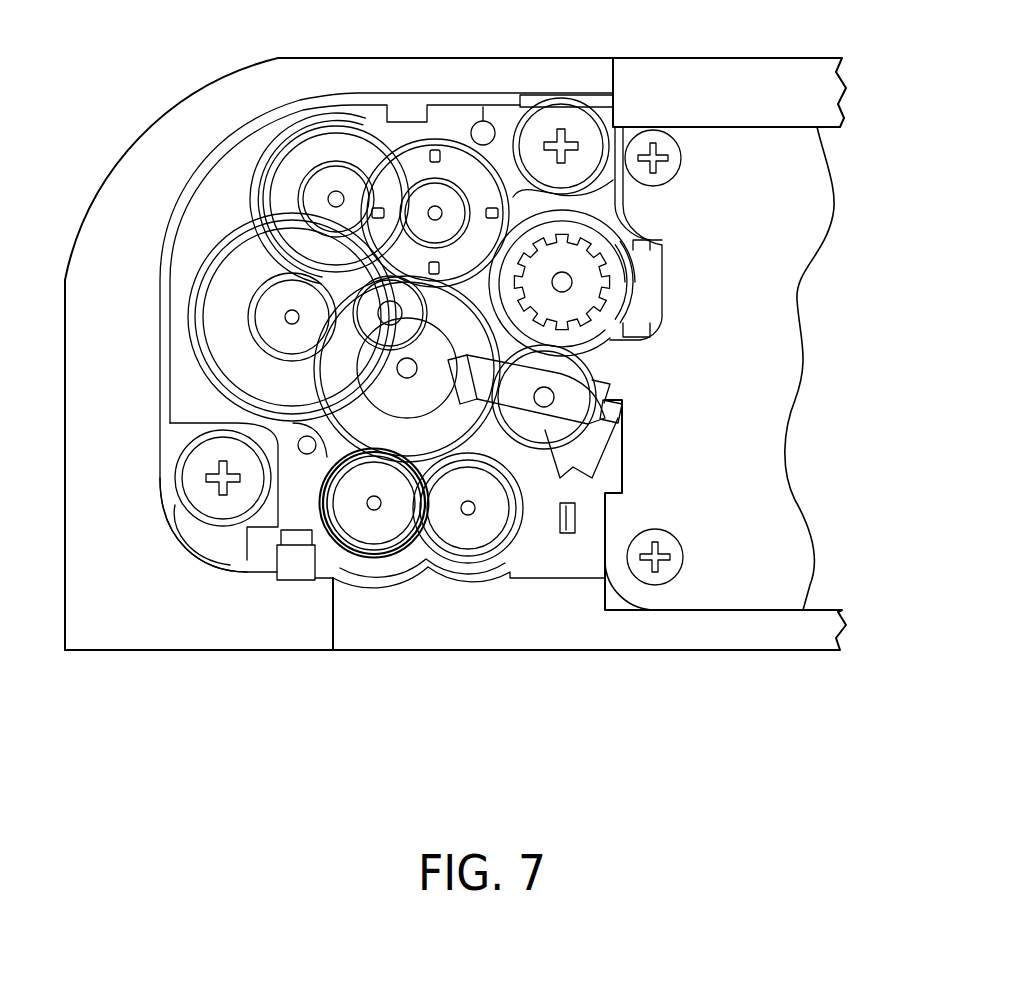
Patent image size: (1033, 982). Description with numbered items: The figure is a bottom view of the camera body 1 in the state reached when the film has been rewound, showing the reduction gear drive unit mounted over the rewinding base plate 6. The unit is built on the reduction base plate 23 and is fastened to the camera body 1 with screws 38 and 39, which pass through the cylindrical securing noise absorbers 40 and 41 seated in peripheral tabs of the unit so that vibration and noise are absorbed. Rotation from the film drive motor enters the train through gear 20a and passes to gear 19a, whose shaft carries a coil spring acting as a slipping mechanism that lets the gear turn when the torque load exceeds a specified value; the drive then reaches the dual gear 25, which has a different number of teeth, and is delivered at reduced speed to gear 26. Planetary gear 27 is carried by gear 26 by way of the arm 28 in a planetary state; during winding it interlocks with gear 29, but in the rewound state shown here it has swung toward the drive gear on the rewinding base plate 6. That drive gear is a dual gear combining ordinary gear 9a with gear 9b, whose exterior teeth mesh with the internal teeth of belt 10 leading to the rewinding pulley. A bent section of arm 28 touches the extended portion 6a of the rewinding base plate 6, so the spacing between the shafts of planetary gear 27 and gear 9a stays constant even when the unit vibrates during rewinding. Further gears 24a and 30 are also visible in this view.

The camera body 1 is at (297, 62).
The rewinding base plate 6 is at (787, 143).
The extended portion 6a is at (610, 398).
The ordinary gear 9a is at (633, 268).
The gear having exterior teeth 9b is at (637, 297).
The belt 10 is at (605, 345).
The gear 19a is at (433, 150).
The gear 20a is at (257, 292).
The reduction base plate 23 is at (195, 238).
The gear 24a is at (300, 158).
The dual gear 25 is at (217, 347).
The gear 26 is at (368, 412).
The planetary gear 27 is at (540, 430).
The arm 28 is at (583, 417).
The gear 29 is at (463, 527).
The gear 30 is at (358, 527).
The screw 38 is at (213, 505).
The screw 39 is at (542, 125).
The securing noise absorber 40 is at (185, 507).
The securing noise absorber 41 is at (583, 105).